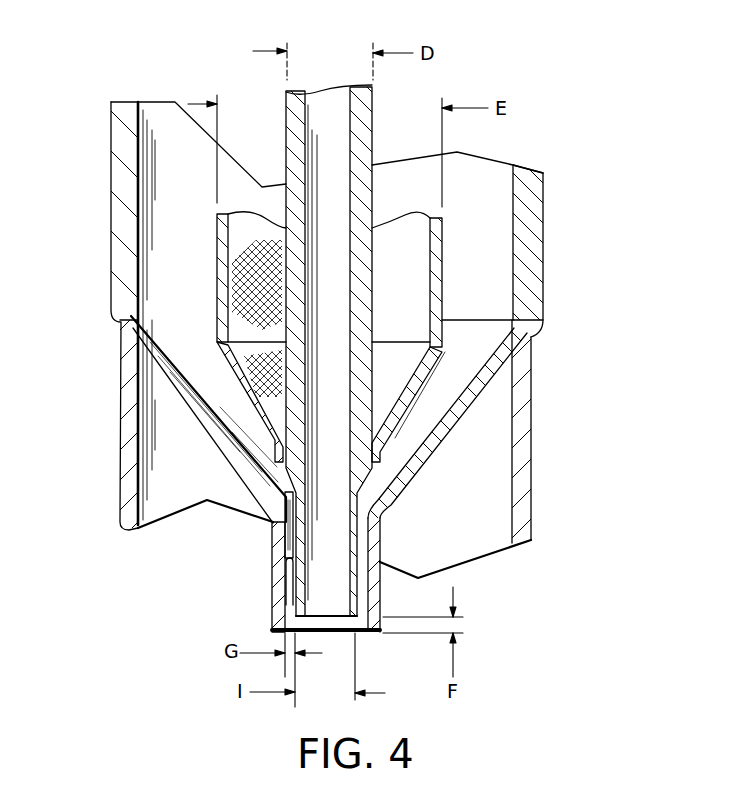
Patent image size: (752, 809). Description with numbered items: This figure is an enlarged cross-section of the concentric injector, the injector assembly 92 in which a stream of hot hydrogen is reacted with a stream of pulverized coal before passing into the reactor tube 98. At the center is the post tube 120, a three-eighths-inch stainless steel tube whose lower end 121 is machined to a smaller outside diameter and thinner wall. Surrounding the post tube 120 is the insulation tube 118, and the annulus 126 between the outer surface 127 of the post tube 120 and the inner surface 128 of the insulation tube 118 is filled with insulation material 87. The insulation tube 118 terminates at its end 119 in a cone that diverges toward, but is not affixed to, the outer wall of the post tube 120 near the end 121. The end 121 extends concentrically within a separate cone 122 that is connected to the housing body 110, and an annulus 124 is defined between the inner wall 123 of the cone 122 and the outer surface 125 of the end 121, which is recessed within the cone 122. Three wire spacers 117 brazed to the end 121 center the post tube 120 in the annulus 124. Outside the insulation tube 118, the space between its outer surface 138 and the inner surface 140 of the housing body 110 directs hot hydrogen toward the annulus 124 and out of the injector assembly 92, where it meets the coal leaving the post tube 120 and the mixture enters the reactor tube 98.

The insulation material 87 is at (240, 357).
The injector assembly 92 is at (552, 420).
The reactor tube 98 is at (532, 518).
The housing body 110 is at (543, 172).
The wire spacers 117 is at (288, 557).
The insulation tube 118 is at (440, 277).
The end 119 is at (422, 382).
The post tube 120 is at (357, 292).
The end 121 is at (358, 611).
The cone 122 is at (425, 463).
The inner wall 123 is at (287, 600).
The annulus 124 is at (364, 538).
The outer surface 125 is at (293, 543).
The annulus 126 is at (410, 238).
The outer surface 127 is at (284, 272).
The inner surface 128 is at (235, 292).
The outer surface 138 is at (133, 223).
The inner surface 140 is at (150, 141).